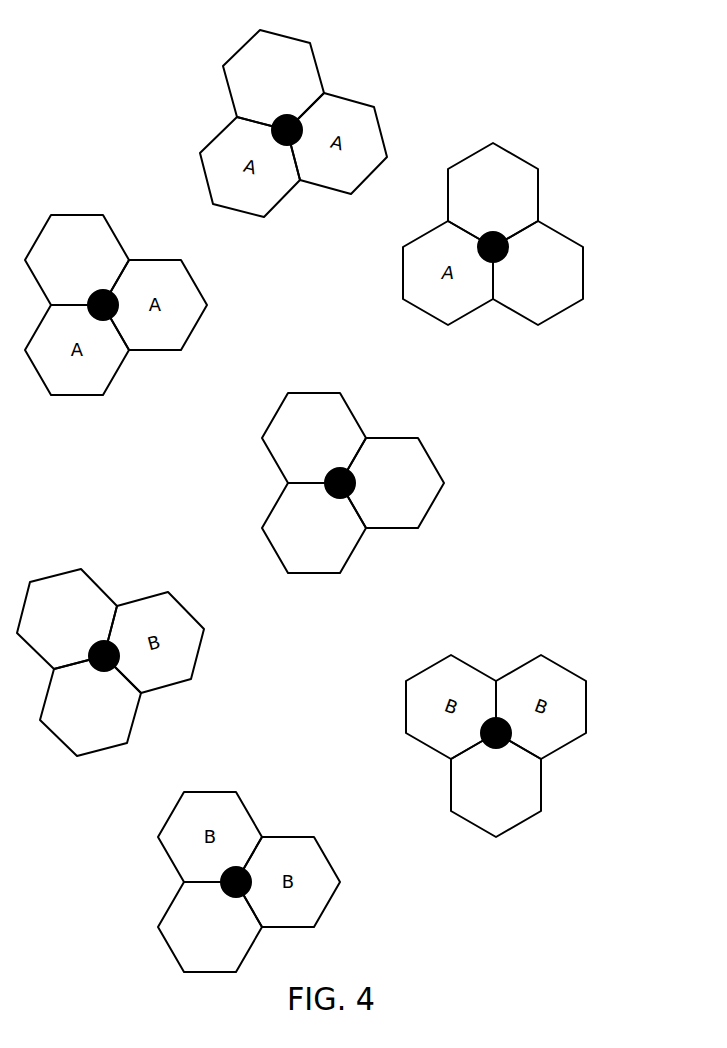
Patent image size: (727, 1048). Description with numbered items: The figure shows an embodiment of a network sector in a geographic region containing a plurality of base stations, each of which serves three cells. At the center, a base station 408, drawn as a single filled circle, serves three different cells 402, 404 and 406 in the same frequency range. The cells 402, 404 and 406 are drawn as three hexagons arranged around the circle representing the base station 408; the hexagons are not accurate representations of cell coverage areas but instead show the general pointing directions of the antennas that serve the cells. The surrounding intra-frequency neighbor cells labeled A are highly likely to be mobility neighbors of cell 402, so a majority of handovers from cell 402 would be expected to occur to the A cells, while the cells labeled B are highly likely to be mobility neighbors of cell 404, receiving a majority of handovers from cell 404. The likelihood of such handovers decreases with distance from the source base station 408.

The cell 402 is at (314, 438).
The cell 404 is at (314, 528).
The cell 406 is at (392, 483).
The base station 408 is at (327, 478).